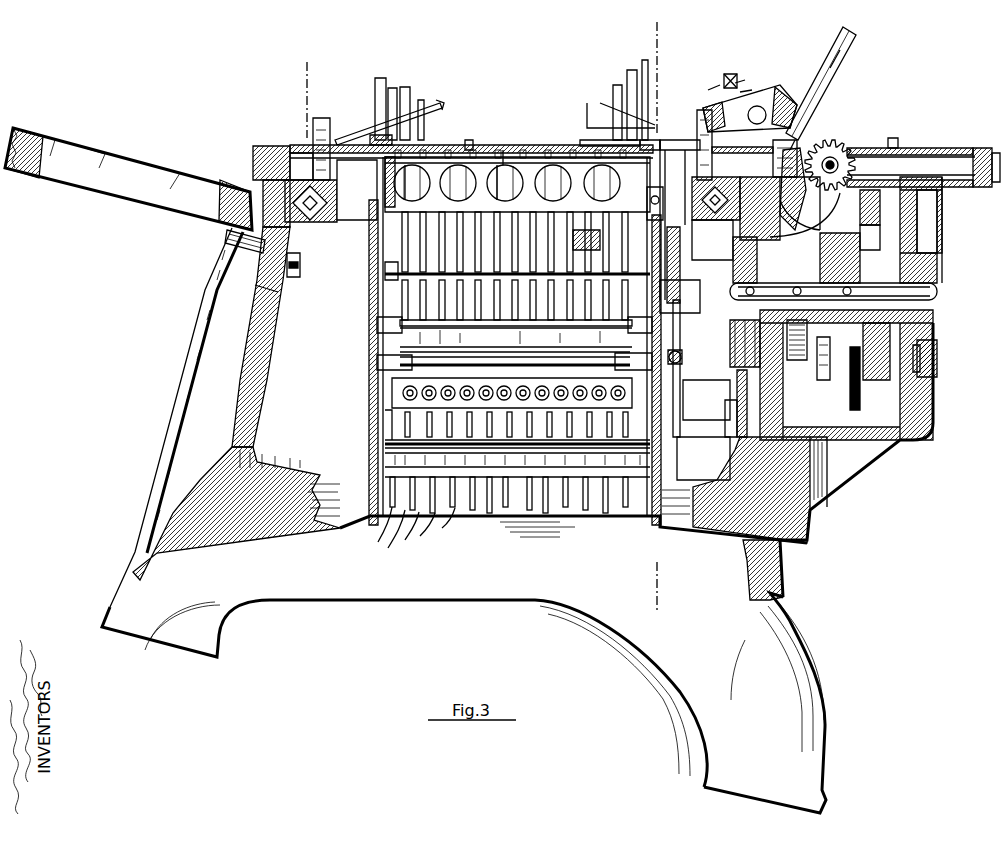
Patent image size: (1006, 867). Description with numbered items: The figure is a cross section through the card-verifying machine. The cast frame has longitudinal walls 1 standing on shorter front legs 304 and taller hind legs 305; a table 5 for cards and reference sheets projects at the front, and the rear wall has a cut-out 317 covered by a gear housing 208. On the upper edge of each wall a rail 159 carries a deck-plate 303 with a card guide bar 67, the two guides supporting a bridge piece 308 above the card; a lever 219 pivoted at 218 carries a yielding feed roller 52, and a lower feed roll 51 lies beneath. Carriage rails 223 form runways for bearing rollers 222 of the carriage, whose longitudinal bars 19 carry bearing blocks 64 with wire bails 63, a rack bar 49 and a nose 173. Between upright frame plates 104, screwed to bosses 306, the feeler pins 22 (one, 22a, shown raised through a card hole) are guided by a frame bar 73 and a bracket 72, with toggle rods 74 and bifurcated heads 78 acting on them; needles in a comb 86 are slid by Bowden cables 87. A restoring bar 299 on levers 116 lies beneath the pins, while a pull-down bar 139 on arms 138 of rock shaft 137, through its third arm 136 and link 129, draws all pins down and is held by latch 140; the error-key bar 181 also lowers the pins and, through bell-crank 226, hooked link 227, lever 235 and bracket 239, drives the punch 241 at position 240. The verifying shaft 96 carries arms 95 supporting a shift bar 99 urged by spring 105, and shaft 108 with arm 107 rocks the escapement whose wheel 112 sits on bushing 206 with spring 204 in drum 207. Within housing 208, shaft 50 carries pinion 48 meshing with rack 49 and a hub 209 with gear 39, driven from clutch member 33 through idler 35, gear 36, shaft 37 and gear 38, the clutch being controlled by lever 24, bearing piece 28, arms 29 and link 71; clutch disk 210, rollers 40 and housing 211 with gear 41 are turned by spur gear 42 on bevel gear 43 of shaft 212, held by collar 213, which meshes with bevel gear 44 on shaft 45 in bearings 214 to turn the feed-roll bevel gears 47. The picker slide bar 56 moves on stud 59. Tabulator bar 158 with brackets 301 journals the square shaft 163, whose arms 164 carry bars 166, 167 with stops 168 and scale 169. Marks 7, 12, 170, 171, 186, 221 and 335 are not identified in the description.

The frame wall 1 is at (233, 398).
The table 5 is at (52, 170).
The section line 7 is at (303, 72).
The section line 12 is at (653, 32).
The carriage longitudinal bar 19 is at (263, 255).
The feeler pin 22 is at (481, 150).
The projected feeler pin 22a is at (470, 140).
The two-armed lever 24 is at (710, 320).
The bearing piece 28 is at (725, 372).
The clutch fork arm 29 is at (703, 382).
The clutch member 33 is at (703, 443).
The idler gear 35 is at (743, 440).
The gear 36 is at (732, 403).
The shaft 37 is at (935, 370).
The gear 38 is at (932, 393).
The gear 39 is at (850, 233).
The clutch roller 40 is at (917, 220).
The gear 41 is at (940, 263).
The spur gear 42 is at (893, 150).
The bevel gear 43 is at (893, 138).
The bevel gear 44 is at (850, 152).
The feed-roll drive shaft 45 is at (815, 204).
The bevel gear 47 is at (817, 200).
The pinion 48 is at (737, 323).
The rack bar 49 is at (735, 265).
The shaft 50 is at (937, 302).
The lower feed roll 51 is at (425, 122).
The feed roller 52 is at (402, 95).
The slide bar 56 is at (258, 326).
The stud 59 is at (262, 292).
The wire bail 63 is at (372, 112).
The bearing block 64 is at (318, 138).
The guide bar 67 is at (368, 130).
The link 71 is at (685, 333).
The bracket 72 is at (385, 438).
The guide frame bar 73 is at (499, 183).
The toggle rod 74 is at (378, 440).
The bifurcated head 78 is at (407, 294).
The comb 86 is at (417, 510).
The Bowden cable 87 is at (395, 516).
The arm 95 is at (408, 328).
The shaft 96 is at (340, 358).
The shift bar 99 is at (388, 364).
The frame plate 104 is at (387, 316).
The spring 105 is at (375, 283).
The arm 107 is at (470, 393).
The shaft 108 is at (405, 405).
The escapement wheel 112 is at (838, 375).
The lever 116 is at (370, 456).
The link 129 is at (590, 230).
The arm 136 is at (395, 240).
The rock shaft 137 is at (412, 263).
The arm 138 is at (400, 278).
The pull-down bar 139 is at (413, 182).
The latch 140 is at (612, 126).
The tabulator bar 158 is at (836, 144).
The frame rail 159 is at (253, 176).
The square shaft 163 is at (836, 62).
The arm 164 is at (766, 104).
The round bar 166 is at (808, 120).
The comb bar 167 is at (731, 80).
The tabulator stop 168 is at (714, 86).
The scale 169 is at (855, 35).
The pivot 170 is at (747, 88).
The stud 171 is at (742, 80).
The nose 173 is at (702, 105).
The error-key bar 181 is at (700, 315).
The plate 186 is at (697, 112).
The spring 204 is at (821, 382).
The bushing 206 is at (858, 392).
The drum 207 is at (797, 362).
The gear housing 208 is at (917, 238).
The hub 209 is at (850, 220).
The clutch disk 210 is at (920, 325).
The clutch housing 211 is at (935, 278).
The shaft 212 is at (938, 150).
The collar 213 is at (985, 152).
The bearing 214 is at (833, 210).
The pivot 218 is at (380, 118).
The roller lever 219 is at (390, 102).
The pivot 221 is at (228, 238).
The bearing roller 222 is at (331, 191).
The carriage rail 223 is at (256, 150).
The bell-crank 226 is at (700, 122).
The hooked link 227 is at (702, 107).
The lever 235 is at (772, 138).
The bracket 239 is at (648, 95).
The punch position 240 is at (632, 130).
The punch 241 is at (618, 108).
The restoring bar 299 is at (500, 480).
The end bracket 301 is at (805, 138).
The deck-plate 303 is at (275, 146).
The front leg 304 is at (175, 625).
The hind leg 305 is at (767, 753).
The boss 306 is at (340, 527).
The bridge piece 308 is at (506, 140).
The cut-out 317 is at (812, 456).
The plate 335 is at (585, 140).